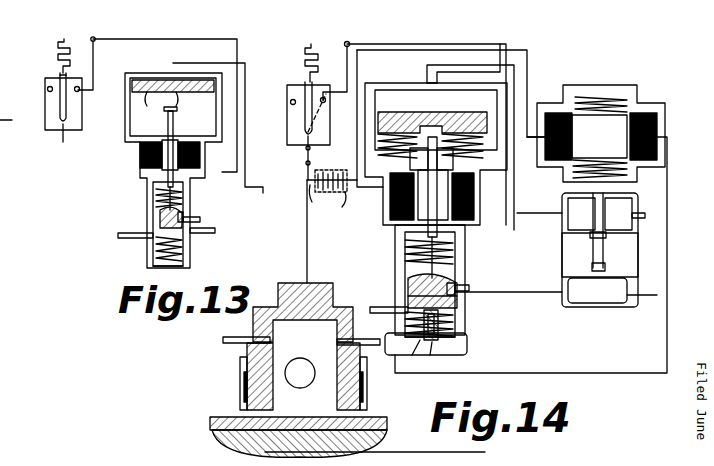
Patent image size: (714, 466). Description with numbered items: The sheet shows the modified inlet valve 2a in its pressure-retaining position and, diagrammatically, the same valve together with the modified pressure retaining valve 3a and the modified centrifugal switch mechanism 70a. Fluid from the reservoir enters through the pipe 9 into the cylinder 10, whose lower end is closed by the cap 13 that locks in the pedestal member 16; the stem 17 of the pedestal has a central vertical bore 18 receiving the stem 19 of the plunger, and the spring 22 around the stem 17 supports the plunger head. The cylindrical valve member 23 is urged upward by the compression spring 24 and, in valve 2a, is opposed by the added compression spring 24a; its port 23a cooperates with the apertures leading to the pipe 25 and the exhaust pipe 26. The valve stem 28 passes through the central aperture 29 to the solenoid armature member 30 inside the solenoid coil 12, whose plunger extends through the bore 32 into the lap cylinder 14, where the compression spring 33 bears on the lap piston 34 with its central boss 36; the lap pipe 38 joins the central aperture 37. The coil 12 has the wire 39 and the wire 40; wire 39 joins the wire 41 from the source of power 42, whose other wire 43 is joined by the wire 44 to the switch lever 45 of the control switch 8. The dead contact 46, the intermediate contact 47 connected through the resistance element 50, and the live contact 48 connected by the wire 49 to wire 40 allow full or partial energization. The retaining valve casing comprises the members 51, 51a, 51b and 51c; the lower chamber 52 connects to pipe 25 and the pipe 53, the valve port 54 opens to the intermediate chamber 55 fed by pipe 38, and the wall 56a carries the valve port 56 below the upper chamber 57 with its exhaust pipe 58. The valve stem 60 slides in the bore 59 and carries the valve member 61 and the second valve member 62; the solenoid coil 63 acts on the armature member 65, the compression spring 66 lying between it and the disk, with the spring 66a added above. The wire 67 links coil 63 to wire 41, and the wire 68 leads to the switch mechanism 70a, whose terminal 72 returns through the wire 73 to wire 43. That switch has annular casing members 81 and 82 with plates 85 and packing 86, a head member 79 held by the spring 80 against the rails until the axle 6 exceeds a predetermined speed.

In FIG. 13, the wire 40 is at (131, 114).
In FIG. 14, the wire 40 is at (235, 46).
In FIG. 13, the resistance element 50 is at (58, 51).
In FIG. 14, the resistance element 50 is at (305, 63).
In FIG. 13, the wire 49 is at (94, 62).
In FIG. 14, the wire 49 is at (335, 71).
In FIG. 13, the intermediate contact 47 is at (66, 83).
In FIG. 14, the intermediate contact 47 is at (321, 102).
In FIG. 13, the dead contact 46 is at (48, 87).
In FIG. 14, the dead contact 46 is at (291, 100).
In FIG. 13, the control switch 8 is at (45, 101).
In FIG. 14, the control switch 8 is at (287, 110).
In FIG. 13, the live contact 48 is at (79, 91).
In FIG. 14, the live contact 48 is at (325, 99).
In FIG. 13, the switch lever 45 is at (60, 108).
In FIG. 14, the switch lever 45 is at (305, 122).
In FIG. 13, the wire 44 is at (63, 138).
In FIG. 14, the wire 44 is at (306, 174).
In FIG. 13, the lap pipe 38 is at (8, 130).
In FIG. 14, the lap pipe 38 is at (262, 148).
In FIG. 13, the inlet valve 2a is at (156, 65).
In FIG. 14, the inlet valve 2a is at (395, 80).
In FIG. 13, the lap cylinder 14 is at (125, 120).
In FIG. 14, the lap cylinder 14 is at (365, 118).
In FIG. 13, the wire 39 is at (150, 103).
In FIG. 14, the wire 39 is at (372, 200).
In FIG. 13, the central boss 36 is at (186, 103).
In FIG. 14, the central boss 36 is at (412, 132).
In FIG. 13, the solenoid armature member 30 is at (186, 146).
In FIG. 14, the solenoid armature member 30 is at (474, 200).
In FIG. 13, the electromagnetic solenoid coil 12 is at (145, 160).
In FIG. 14, the electromagnetic solenoid coil 12 is at (395, 228).
In FIG. 13, the valve stem 28 is at (176, 184).
In FIG. 14, the valve stem 28 is at (438, 240).
In FIG. 13, the compression spring 24a is at (157, 196).
In FIG. 14, the compression spring 24a is at (408, 250).
In FIG. 13, the port 23a is at (184, 217).
In FIG. 14, the port 23a is at (452, 283).
In FIG. 13, the cylindrical valve member 23 is at (160, 220).
In FIG. 14, the cylindrical valve member 23 is at (408, 280).
In FIG. 13, the exhaust pipe 26 is at (200, 220).
In FIG. 14, the exhaust pipe 26 is at (468, 284).
In FIG. 13, the pipe 25 is at (214, 234).
In FIG. 14, the pipe 25 is at (516, 292).
In FIG. 13, the pipe 9 is at (124, 238).
In FIG. 14, the pipe 9 is at (360, 300).
In FIG. 13, the compression spring 24 is at (165, 252).
In FIG. 14, the compression spring 24 is at (410, 326).
In FIG. 13, the spring 22 is at (170, 266).
In FIG. 14, the spring 22 is at (456, 336).
In FIG. 14, the source of power 42 is at (330, 172).
In FIG. 14, the wire 43 is at (315, 203).
In FIG. 14, the wire 41 is at (338, 208).
In FIG. 14, the wire 73 is at (307, 251).
In FIG. 14, the compression spring 33 is at (390, 140).
In FIG. 14, the central aperture 37 is at (425, 84).
In FIG. 14, the lap piston 34 is at (445, 132).
In FIG. 14, the bore 32 is at (431, 159).
In FIG. 14, the central aperture 29 is at (410, 238).
In FIG. 14, the screw-threaded cap 13 is at (468, 346).
In FIG. 14, the cylinder 10 is at (408, 297).
In FIG. 14, the central vertical bore 18 is at (440, 318).
In FIG. 14, the stem 19 is at (436, 326).
In FIG. 14, the pedestal member 16 is at (416, 354).
In FIG. 14, the stem 17 is at (430, 355).
In FIG. 14, the lower casing member 51 is at (562, 280).
In FIG. 14, the wire 68 is at (603, 373).
In FIG. 14, the pressure retaining valve 3a is at (602, 82).
In FIG. 14, the wire 67 is at (530, 92).
In FIG. 14, the solenoid coil 63 is at (640, 110).
In FIG. 14, the spring 66a is at (612, 98).
In FIG. 14, the cap member 51c is at (645, 112).
In FIG. 14, the solenoid armature member 65 is at (599, 136).
In FIG. 14, the compression spring 66 is at (630, 176).
In FIG. 14, the casing member 51b is at (556, 168).
In FIG. 14, the valve stem 60 is at (625, 182).
In FIG. 14, the central bore 59 is at (568, 210).
In FIG. 14, the casing member 51a is at (562, 225).
In FIG. 14, the exhaust pipe 58 is at (645, 216).
In FIG. 14, the upper chamber 57 is at (615, 222).
In FIG. 14, the wall 56a is at (632, 245).
In FIG. 14, the valve port 56 is at (589, 241).
In FIG. 14, the valve member 61 is at (579, 259).
In FIG. 14, the second valve member 62 is at (607, 258).
In FIG. 14, the intermediate chamber 55 is at (612, 268).
In FIG. 14, the valve port 54 is at (597, 290).
In FIG. 14, the lower chamber 52 is at (580, 298).
In FIG. 14, the pipe 53 is at (645, 300).
In FIG. 14, the annular casing member 81 is at (305, 290).
In FIG. 14, the centrifugal switch mechanism 70a is at (218, 339).
In FIG. 14, the terminal 72 is at (230, 343).
In FIG. 14, the spring 80 is at (267, 375).
In FIG. 14, the head member 79 is at (395, 405).
In FIG. 14, the annular casing member 82 is at (339, 373).
In FIG. 14, the annular plate 85 is at (240, 378).
In FIG. 14, the packing 86 is at (242, 392).
In FIG. 14, the axle 6 is at (215, 438).